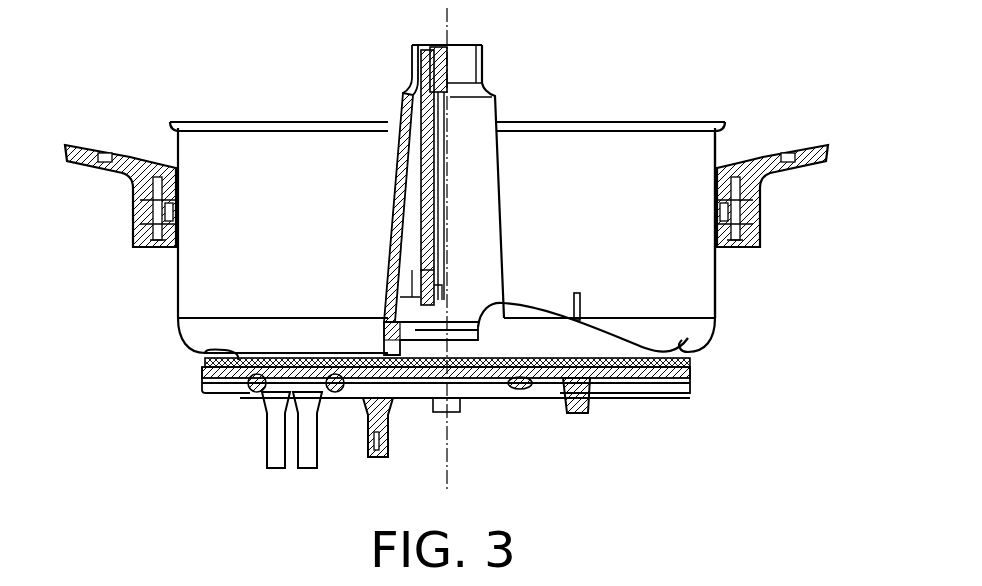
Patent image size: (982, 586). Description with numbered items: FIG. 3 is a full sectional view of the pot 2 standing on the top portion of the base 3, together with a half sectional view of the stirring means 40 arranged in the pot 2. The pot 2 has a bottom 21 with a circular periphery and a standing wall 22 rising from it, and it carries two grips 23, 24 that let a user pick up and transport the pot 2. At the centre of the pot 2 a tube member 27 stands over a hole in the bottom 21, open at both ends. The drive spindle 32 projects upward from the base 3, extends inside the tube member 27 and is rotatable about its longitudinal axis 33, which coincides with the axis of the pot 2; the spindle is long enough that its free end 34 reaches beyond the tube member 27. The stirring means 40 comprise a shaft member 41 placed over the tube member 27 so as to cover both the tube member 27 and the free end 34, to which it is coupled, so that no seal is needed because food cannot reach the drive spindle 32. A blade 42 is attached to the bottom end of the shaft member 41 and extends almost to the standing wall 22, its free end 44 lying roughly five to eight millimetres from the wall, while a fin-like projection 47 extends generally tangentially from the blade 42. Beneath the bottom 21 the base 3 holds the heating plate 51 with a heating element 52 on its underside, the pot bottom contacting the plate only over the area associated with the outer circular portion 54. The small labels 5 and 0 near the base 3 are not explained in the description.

The pot 2 is at (226, 145).
The standing wall 22 is at (706, 283).
The grip 23 is at (88, 146).
The grip 24 is at (812, 146).
The tube member 27 is at (412, 185).
The drive spindle 32 is at (428, 232).
The longitudinal axis 33 is at (455, 16).
The free end 34 is at (456, 78).
The stirring means 40 is at (484, 182).
The shaft member 41 is at (486, 230).
The blade 42 is at (666, 322).
The free end 44 is at (698, 333).
The fin-like projection 47 is at (582, 308).
The bottom 21 is at (692, 367).
The heating plate 51 is at (205, 356).
The heating element 52 is at (256, 395).
The outer circular portion 54 is at (307, 430).
The fastener 5 is at (338, 395).
The base 3 is at (381, 427).
The base fastener 0 is at (520, 398).